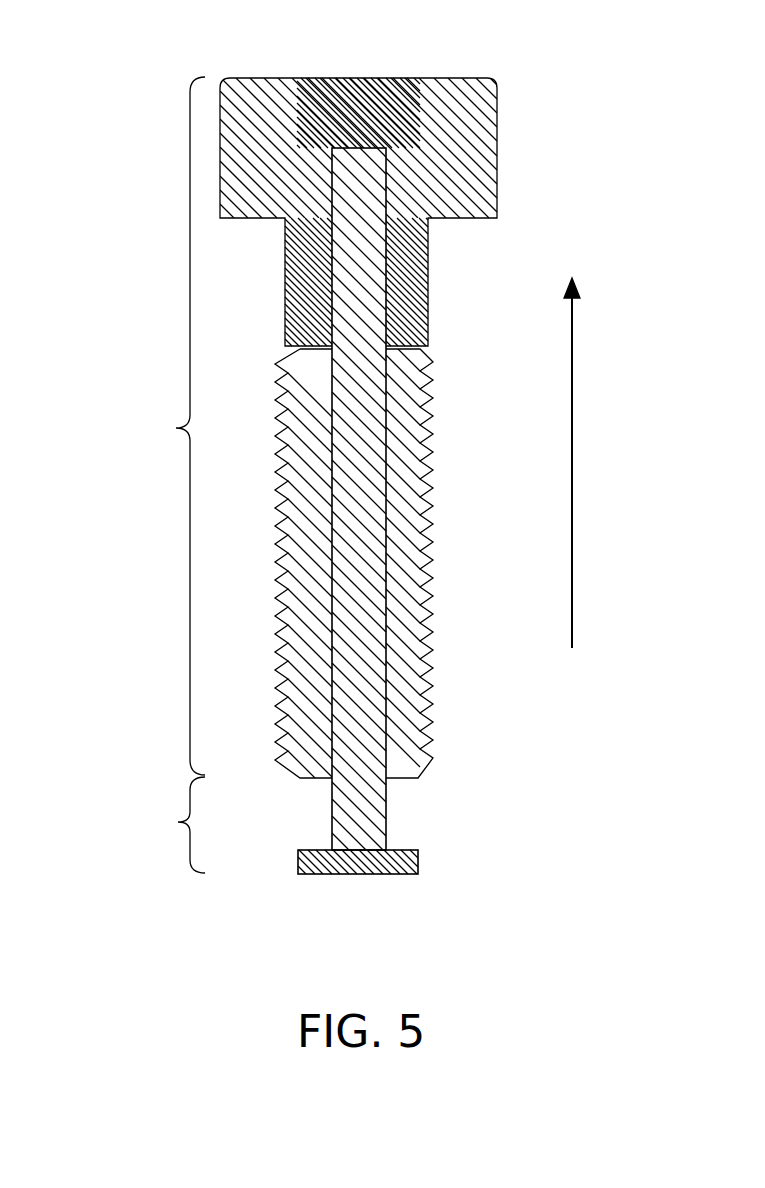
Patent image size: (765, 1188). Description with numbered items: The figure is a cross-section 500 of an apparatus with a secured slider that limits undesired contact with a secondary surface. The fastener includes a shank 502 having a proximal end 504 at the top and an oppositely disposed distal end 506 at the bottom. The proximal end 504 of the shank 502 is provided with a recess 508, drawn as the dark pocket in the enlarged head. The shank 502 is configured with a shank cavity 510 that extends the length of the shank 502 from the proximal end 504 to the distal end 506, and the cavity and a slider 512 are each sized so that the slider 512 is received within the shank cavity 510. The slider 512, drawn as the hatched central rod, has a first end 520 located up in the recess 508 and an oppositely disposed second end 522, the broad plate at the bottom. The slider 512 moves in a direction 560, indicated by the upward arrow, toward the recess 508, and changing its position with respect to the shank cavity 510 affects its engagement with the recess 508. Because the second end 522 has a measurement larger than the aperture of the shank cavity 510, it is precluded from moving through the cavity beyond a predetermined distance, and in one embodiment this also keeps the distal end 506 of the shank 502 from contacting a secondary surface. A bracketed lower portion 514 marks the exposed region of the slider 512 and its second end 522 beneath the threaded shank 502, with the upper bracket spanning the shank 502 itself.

The cross-section 500 is at (102, 903).
The shank 502 is at (170, 426).
The proximal end 504 is at (428, 78).
The distal end 506 is at (410, 776).
The recess 508 is at (293, 110).
The shank cavity 510 is at (392, 350).
The slider 512 is at (386, 812).
The lower portion 514 is at (170, 825).
The first end 520 is at (355, 148).
The second end 522 is at (357, 875).
The direction 560 is at (572, 423).